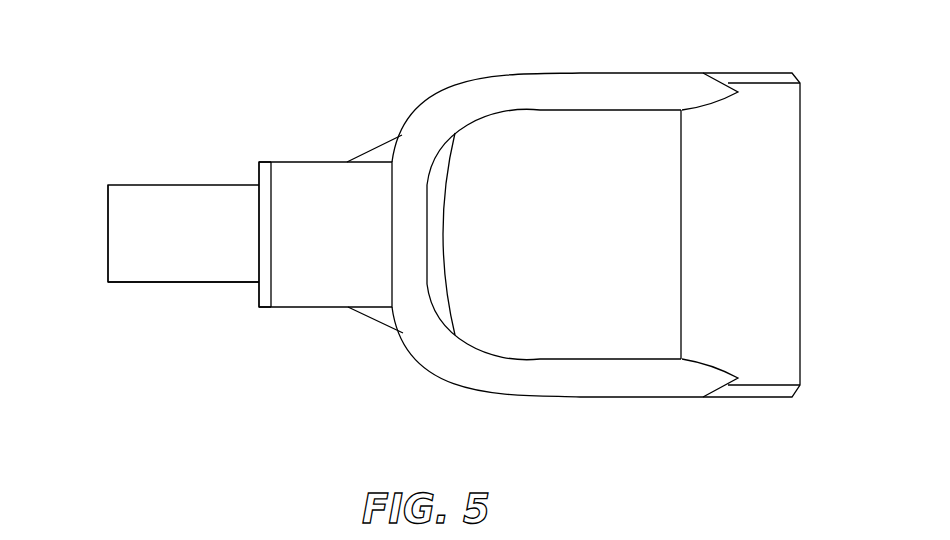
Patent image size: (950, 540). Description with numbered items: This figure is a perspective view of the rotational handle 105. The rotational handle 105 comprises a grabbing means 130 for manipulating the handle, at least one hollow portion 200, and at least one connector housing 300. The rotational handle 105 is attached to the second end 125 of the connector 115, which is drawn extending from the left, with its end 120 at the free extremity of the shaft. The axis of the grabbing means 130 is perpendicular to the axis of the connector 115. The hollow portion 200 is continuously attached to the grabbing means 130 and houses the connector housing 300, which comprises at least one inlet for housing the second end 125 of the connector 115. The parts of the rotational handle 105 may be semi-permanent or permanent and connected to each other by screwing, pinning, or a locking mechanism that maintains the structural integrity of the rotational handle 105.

The rotational handle 105 is at (127, 71).
The connector 115 is at (143, 190).
The shaft end 120 is at (112, 280).
The second end 125 is at (205, 280).
The hollow portion 200 is at (287, 302).
The connector housing 300 is at (265, 167).
The grabbing means 130 is at (793, 132).